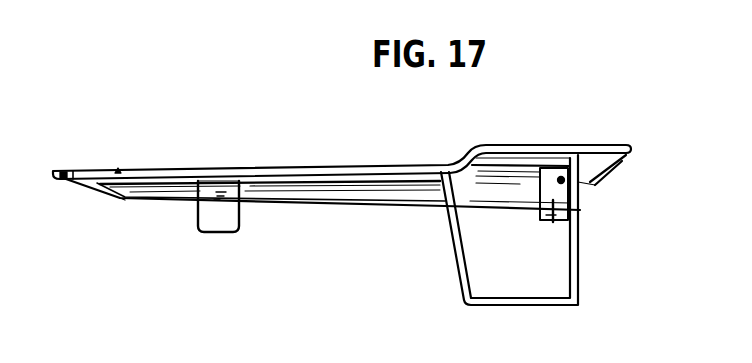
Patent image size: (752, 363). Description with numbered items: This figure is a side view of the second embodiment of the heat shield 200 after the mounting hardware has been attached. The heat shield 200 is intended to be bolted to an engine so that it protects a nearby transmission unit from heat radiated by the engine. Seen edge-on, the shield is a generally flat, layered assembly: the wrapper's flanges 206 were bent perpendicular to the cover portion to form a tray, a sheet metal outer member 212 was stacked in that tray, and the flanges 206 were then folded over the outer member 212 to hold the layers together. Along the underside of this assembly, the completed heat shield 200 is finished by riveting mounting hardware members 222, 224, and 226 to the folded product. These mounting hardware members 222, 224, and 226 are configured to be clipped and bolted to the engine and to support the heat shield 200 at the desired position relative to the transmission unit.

The heat shield 200 is at (236, 140).
The flanges 206 is at (93, 175).
The outer member 212 is at (404, 191).
The mounting hardware member 222 is at (220, 217).
The mounting hardware member 224 is at (527, 304).
The mounting hardware member 226 is at (542, 222).